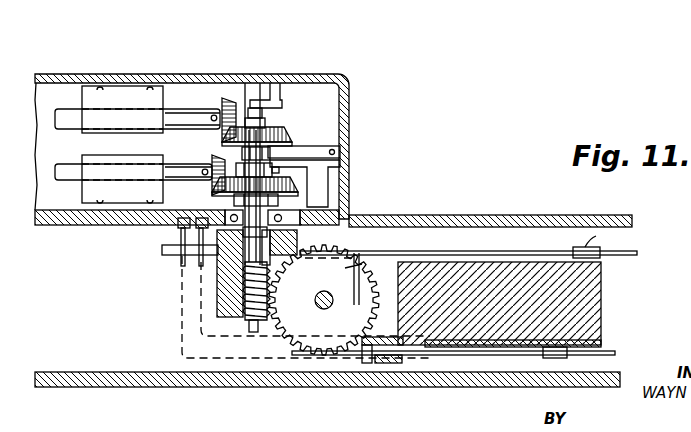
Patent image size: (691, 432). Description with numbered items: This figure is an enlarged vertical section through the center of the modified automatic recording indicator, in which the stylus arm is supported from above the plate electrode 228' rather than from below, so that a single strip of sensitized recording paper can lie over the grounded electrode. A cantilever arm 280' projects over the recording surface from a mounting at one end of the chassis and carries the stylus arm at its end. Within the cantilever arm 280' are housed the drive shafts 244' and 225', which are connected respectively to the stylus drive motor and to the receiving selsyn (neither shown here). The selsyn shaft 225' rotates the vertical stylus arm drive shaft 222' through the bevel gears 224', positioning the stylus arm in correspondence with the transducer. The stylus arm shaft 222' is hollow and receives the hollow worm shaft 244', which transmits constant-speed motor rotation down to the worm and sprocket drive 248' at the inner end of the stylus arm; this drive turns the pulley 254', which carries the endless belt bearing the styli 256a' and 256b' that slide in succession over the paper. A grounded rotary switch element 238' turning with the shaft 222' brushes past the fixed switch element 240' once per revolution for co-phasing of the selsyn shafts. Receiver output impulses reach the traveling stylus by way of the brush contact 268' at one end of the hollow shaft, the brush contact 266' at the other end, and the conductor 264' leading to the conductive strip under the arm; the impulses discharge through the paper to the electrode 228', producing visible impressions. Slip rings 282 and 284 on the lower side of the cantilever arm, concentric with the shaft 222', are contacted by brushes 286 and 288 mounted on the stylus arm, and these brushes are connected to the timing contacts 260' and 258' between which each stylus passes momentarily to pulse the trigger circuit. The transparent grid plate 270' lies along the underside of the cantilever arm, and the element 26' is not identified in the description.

The cantilever arm 280' is at (192, 128).
The drive shaft 244' is at (173, 93).
The receiving selsyn shaft 225' is at (127, 167).
The bevel gears 224' is at (201, 163).
The stylus arm drive shaft 222' is at (235, 190).
The brush contact 268' is at (292, 104).
The rotary switch element 238' is at (319, 145).
The fixed switch element 240' is at (344, 176).
The drive pulley 254' is at (386, 245).
The transparent grid plate 270' is at (490, 201).
The slip ring 282 is at (178, 230).
The slip ring 284 is at (197, 236).
The brush 286 is at (200, 254).
The brush 288 is at (185, 266).
The worm and sprocket drive 248' is at (251, 338).
The grounded contact 258' is at (324, 329).
The brush contact 266' is at (299, 334).
The stylus 256b' is at (495, 242).
The stylus 256a' is at (453, 383).
The sheet 26' is at (531, 303).
The conductor 264' is at (545, 331).
The insulated ring contact 260' is at (375, 383).
The plate electrode 228' is at (363, 361).